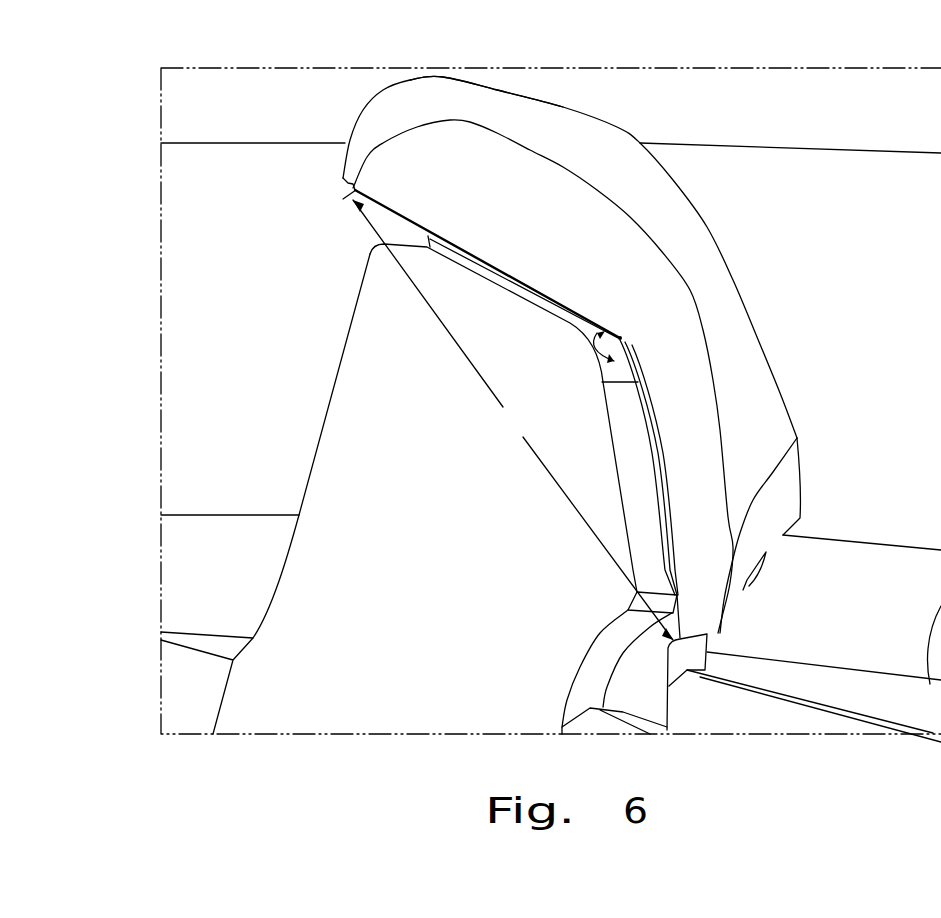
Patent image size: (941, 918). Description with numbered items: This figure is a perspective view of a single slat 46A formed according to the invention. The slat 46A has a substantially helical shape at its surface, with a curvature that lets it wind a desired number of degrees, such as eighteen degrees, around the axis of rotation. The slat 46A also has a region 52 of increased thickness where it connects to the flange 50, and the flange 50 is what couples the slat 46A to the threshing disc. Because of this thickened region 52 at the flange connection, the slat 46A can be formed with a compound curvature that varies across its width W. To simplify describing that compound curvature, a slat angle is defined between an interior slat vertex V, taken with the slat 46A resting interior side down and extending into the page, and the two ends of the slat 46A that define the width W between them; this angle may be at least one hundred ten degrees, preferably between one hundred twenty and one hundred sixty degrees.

The slat 46A is at (637, 137).
The region of increased thickness 52 is at (463, 103).
The flange 50 is at (442, 492).
The interior slat vertex V is at (625, 326).
The width W is at (508, 415).